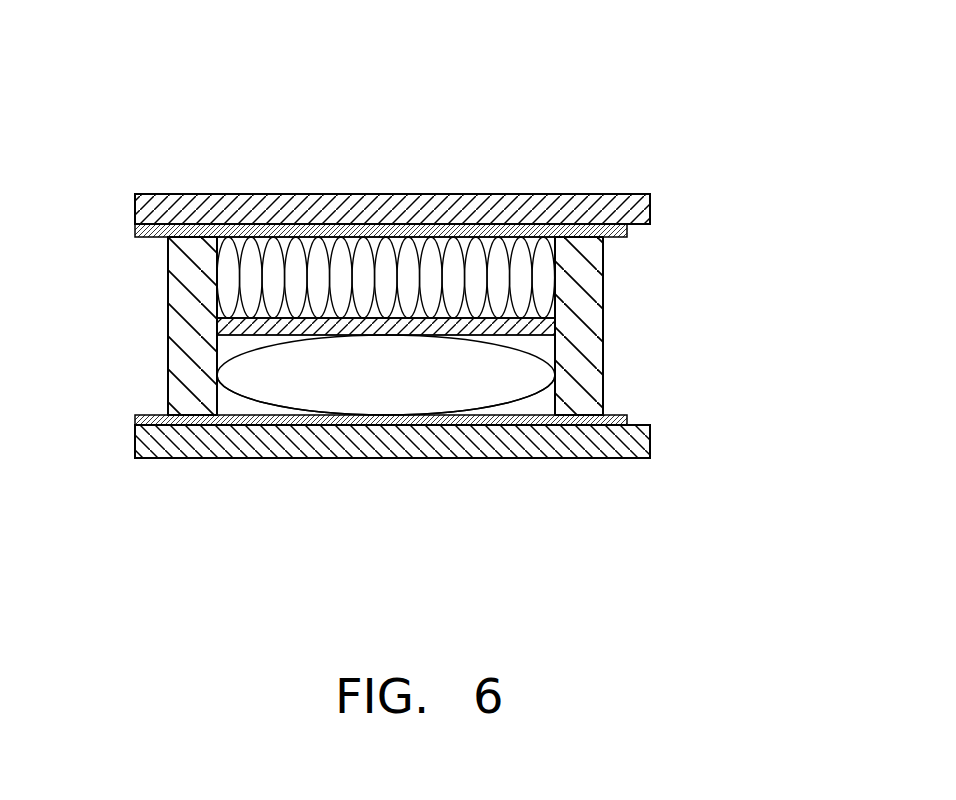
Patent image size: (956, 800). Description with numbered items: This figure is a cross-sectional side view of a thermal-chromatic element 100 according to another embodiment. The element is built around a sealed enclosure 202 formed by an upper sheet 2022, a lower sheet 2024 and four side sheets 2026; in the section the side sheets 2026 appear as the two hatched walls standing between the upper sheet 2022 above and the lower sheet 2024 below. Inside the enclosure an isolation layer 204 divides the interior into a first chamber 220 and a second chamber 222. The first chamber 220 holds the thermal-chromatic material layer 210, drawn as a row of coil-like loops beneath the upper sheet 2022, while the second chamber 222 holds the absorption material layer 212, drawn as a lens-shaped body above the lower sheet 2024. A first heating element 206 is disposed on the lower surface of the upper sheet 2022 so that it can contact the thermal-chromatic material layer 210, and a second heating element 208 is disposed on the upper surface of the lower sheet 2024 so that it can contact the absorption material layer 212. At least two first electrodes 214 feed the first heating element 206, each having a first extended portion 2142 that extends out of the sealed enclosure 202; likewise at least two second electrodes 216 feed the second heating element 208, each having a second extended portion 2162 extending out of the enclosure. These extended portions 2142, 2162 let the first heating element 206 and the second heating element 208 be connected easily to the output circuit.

The lens module 100 is at (412, 72).
The sealed enclosure 202 is at (772, 185).
The upper sheet 2022 is at (642, 205).
The lower sheet 2024 is at (637, 437).
The side sheets 2026 is at (590, 348).
The isolation layer 204 is at (217, 322).
The first heating element 206 is at (422, 210).
The second heating element 208 is at (463, 415).
The thermal-chromatic material layer 210 is at (287, 258).
The absorption material layer 212 is at (368, 395).
The first electrodes 214 is at (192, 247).
The first extended portion 2142 is at (142, 229).
The second electrodes 216 is at (600, 412).
The second extended portion 2162 is at (142, 418).
The first chamber 220 is at (238, 250).
The second chamber 222 is at (230, 402).